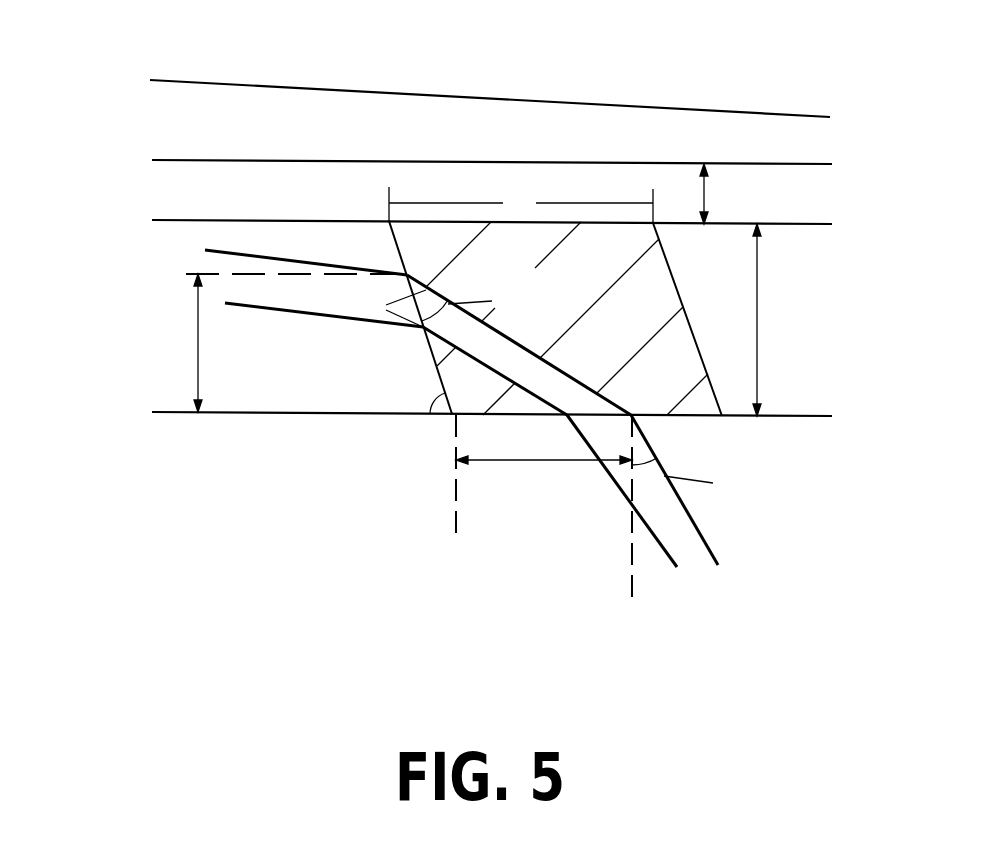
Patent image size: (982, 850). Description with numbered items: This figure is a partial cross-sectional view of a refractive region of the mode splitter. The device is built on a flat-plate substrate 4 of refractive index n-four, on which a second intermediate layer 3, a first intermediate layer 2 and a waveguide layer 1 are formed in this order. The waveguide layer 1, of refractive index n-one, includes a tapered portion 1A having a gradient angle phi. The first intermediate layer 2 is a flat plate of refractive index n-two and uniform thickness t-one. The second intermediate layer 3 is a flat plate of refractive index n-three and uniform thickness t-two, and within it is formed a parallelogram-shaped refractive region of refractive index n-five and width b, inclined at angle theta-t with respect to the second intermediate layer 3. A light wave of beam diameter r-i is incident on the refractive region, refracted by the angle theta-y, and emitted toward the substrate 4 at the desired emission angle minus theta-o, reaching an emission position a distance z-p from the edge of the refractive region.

The waveguide layer 1 is at (438, 88).
The tapered portion 1A is at (498, 97).
The first intermediate layer 2 is at (165, 188).
The second intermediate layer 3 is at (163, 300).
The substrate 4 is at (184, 513).